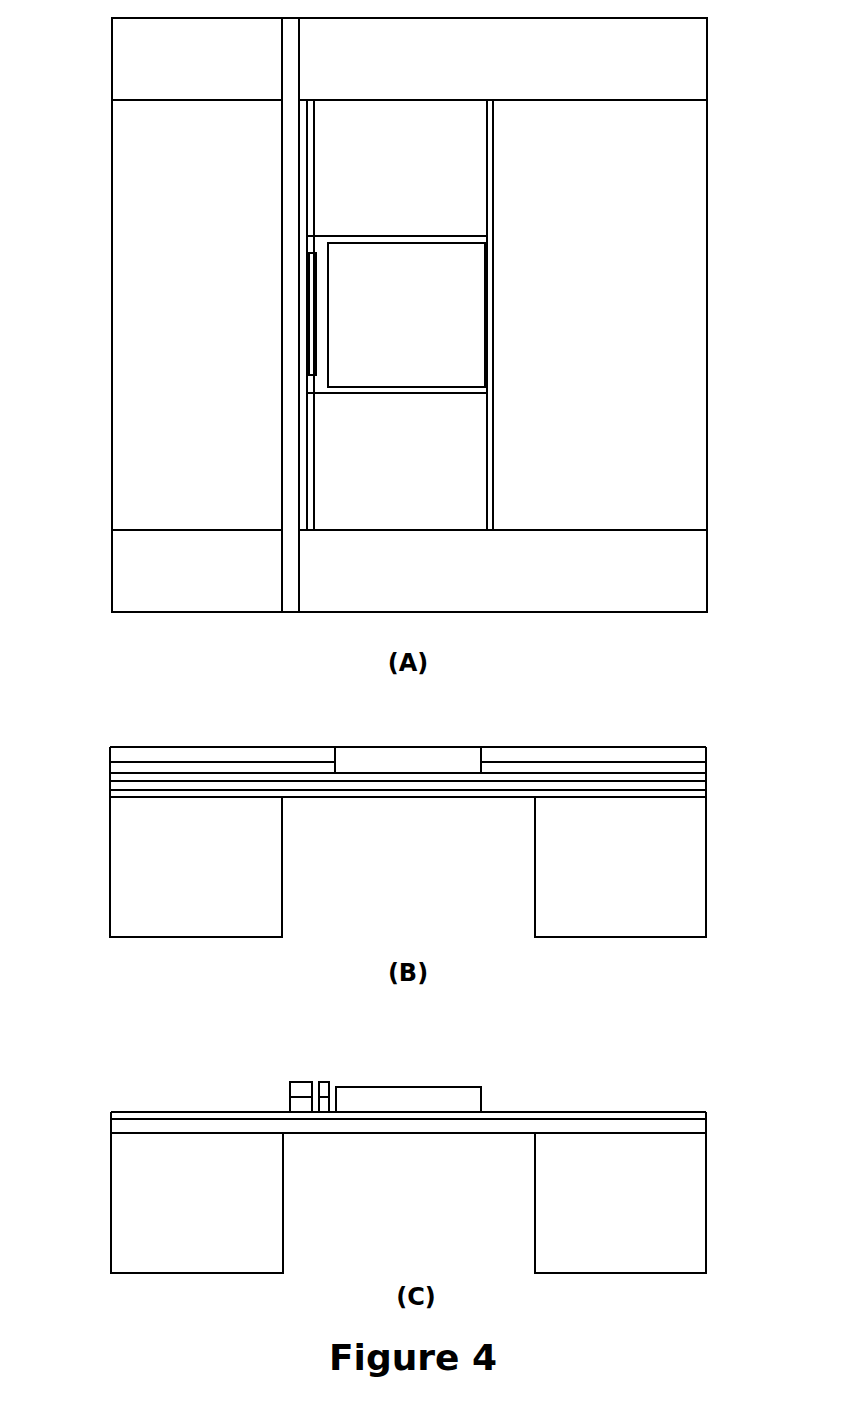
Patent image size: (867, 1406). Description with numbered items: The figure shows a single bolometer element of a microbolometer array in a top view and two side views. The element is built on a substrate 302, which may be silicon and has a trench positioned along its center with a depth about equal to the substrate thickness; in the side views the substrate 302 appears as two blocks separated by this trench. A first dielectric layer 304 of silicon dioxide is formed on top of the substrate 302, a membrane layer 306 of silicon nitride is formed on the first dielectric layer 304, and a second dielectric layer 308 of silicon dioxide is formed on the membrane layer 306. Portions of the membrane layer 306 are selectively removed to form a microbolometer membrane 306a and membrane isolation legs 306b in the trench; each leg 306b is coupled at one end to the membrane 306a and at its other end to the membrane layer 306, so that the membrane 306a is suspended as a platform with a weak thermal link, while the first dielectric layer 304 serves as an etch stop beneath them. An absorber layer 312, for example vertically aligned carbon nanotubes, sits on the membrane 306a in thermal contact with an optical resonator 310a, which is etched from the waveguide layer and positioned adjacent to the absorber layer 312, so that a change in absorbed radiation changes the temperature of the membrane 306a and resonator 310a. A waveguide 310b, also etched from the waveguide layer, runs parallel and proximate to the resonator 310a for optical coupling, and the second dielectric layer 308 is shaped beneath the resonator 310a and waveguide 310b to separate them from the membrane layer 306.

The substrate 302 is at (408, 1035).
The first dielectric layer 304 is at (703, 790).
The membrane layer 306 is at (110, 777).
The microbolometer membrane 306a is at (492, 253).
The membrane isolation legs 306b is at (492, 133).
The second dielectric layer 308 is at (228, 1072).
The optical resonator 310a is at (310, 308).
The waveguide 310b is at (285, 131).
The absorber layer 312 is at (470, 1087).